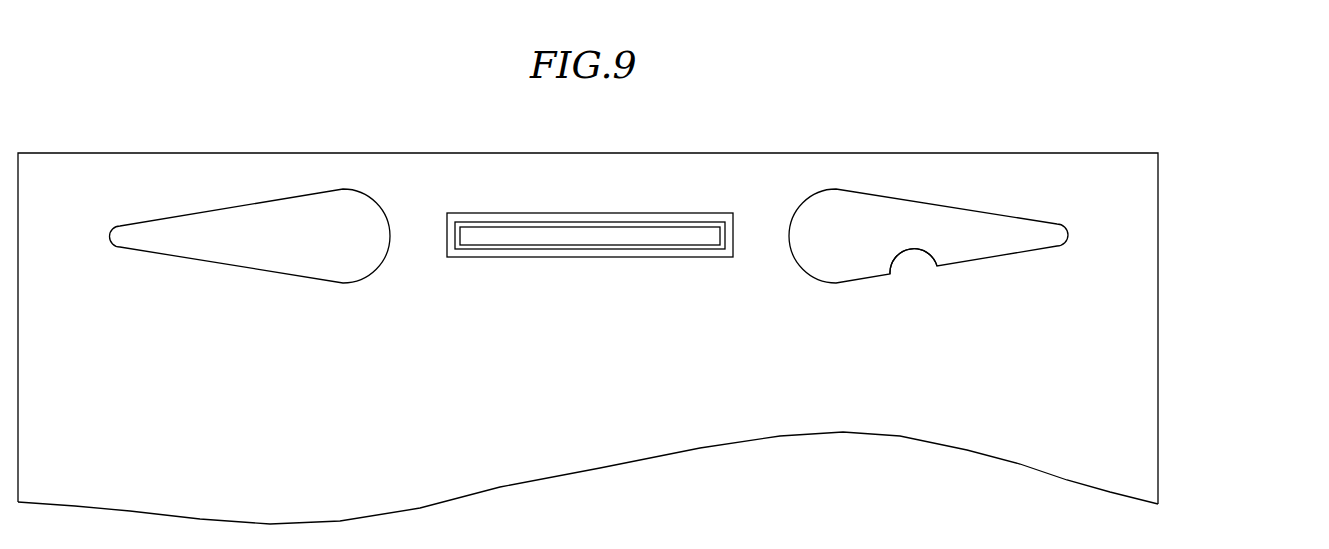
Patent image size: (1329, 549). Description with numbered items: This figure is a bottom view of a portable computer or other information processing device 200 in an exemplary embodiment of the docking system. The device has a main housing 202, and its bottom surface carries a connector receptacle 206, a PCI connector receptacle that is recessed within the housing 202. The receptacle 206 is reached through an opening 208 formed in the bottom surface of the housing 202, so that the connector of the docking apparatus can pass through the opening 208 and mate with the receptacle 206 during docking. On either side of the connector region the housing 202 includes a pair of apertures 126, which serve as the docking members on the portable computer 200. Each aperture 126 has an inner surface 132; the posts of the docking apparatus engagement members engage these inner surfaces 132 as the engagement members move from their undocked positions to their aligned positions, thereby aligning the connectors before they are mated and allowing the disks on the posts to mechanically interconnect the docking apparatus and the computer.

The portable computer 200 is at (1173, 193).
The main housing 202 is at (1127, 437).
The connector receptacle 206 is at (607, 232).
The opening 208 is at (615, 257).
The apertures 126 is at (930, 203).
The inner surfaces 132 is at (890, 266).